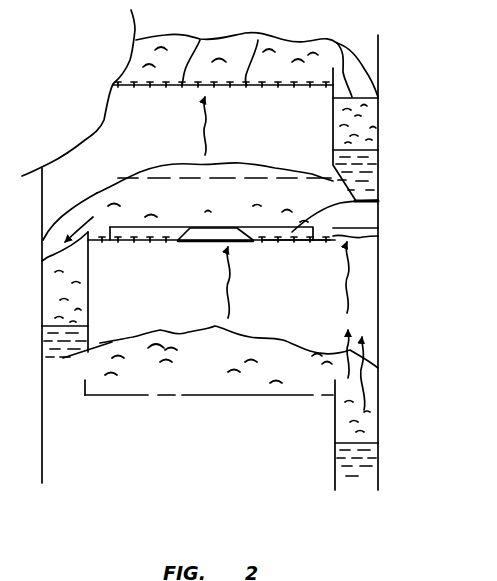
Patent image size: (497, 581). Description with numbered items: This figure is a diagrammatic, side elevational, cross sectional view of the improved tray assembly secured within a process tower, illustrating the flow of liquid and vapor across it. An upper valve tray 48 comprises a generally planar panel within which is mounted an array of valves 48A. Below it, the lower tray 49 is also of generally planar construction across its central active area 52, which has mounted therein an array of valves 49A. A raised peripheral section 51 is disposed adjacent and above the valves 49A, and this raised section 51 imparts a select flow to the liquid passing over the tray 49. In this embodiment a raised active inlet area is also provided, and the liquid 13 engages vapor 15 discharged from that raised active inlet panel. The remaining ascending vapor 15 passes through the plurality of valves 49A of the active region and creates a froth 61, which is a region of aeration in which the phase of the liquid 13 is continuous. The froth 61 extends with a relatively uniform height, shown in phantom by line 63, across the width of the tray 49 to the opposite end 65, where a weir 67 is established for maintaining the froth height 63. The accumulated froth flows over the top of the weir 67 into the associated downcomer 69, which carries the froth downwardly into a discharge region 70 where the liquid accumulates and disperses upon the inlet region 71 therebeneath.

The upper valve tray 48 is at (280, 80).
The valves 48A is at (203, 40).
The liquid 13 is at (368, 166).
The froth height line 63 is at (237, 178).
The opposite end 65 is at (100, 225).
The weir 67 is at (43, 263).
The downcomer 69 is at (88, 294).
The discharge region 70 is at (112, 342).
The inlet region 71 is at (80, 375).
The raised peripheral section 51 is at (188, 213).
The central active area 52 is at (275, 244).
The froth 61 is at (258, 201).
The lower tray 49 is at (342, 220).
The valves 49A is at (378, 236).
The vapor 15 is at (240, 302).